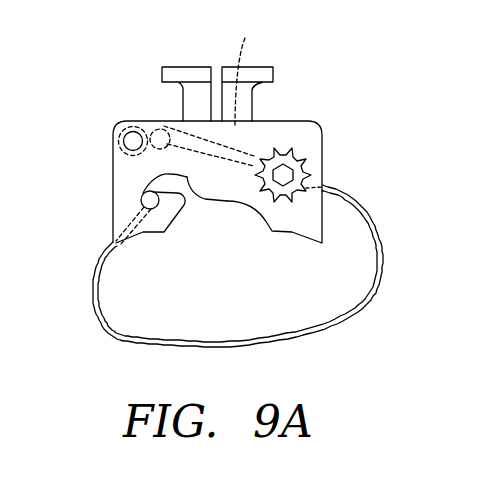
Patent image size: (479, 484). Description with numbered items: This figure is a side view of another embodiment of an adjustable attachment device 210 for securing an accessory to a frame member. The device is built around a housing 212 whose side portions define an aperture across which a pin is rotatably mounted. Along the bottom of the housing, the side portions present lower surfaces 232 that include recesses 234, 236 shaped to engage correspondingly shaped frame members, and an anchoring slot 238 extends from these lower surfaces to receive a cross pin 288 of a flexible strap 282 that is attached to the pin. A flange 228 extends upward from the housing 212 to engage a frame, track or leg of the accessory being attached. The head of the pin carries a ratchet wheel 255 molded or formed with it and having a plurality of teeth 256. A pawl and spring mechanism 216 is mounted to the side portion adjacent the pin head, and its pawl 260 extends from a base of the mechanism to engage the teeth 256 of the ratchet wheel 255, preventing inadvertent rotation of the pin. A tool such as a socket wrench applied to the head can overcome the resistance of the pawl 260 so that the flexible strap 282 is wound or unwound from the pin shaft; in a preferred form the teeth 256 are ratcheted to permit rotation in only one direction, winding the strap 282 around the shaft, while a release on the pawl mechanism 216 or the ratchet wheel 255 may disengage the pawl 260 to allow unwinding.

The adjustable attachment device 210 is at (263, 128).
The housing 212 is at (325, 137).
The pawl and spring mechanism 216 is at (125, 123).
The flange 228 is at (188, 66).
The lower surfaces 232 is at (138, 245).
The recess 234 is at (150, 237).
The recess 236 is at (177, 225).
The anchoring slot 238 is at (213, 202).
The ratchet wheel 255 is at (308, 158).
The teeth 256 is at (287, 150).
The pawl 260 is at (250, 70).
The flexible strap 282 is at (105, 333).
The cross pin 288 is at (122, 123).